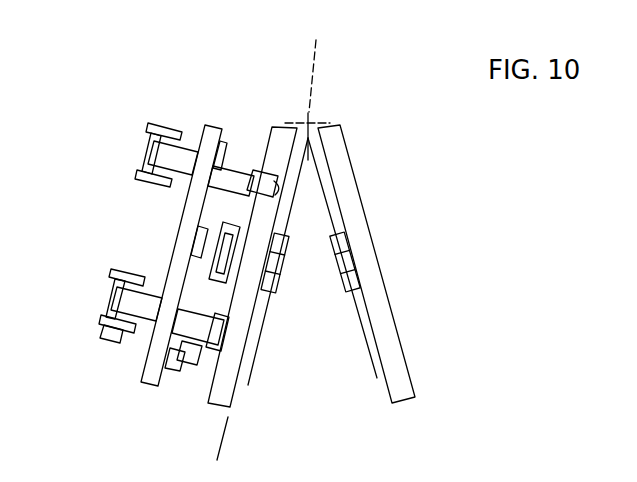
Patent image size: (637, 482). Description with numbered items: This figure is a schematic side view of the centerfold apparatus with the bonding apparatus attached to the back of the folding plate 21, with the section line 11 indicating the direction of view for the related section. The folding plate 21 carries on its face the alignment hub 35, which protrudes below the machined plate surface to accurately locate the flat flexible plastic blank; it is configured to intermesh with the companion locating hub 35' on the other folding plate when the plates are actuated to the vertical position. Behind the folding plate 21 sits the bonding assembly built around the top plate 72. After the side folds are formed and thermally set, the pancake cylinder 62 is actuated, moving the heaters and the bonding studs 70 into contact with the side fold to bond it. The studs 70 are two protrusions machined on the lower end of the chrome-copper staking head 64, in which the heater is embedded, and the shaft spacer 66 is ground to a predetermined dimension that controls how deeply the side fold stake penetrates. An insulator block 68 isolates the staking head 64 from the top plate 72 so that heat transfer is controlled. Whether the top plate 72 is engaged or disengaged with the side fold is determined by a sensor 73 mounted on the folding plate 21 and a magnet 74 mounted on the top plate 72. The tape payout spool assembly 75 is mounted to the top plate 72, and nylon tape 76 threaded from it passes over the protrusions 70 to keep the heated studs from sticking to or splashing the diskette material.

The section line 11- 11 is at (318, 76).
The folding plate 21 is at (247, 383).
The alignment hub 35 is at (289, 282).
The locating hub 35' is at (335, 298).
The pancake cylinder 62 is at (233, 222).
The staking head 64 is at (264, 170).
The shaft spacer 66 is at (200, 247).
The insulator block 68 is at (233, 167).
The bonding studs 70 is at (276, 184).
The top plate 72 is at (213, 124).
The sensor 73 is at (190, 380).
The magnet 74 is at (172, 367).
The tape payout spool assembly 75 is at (114, 335).
The tape 76 is at (162, 160).